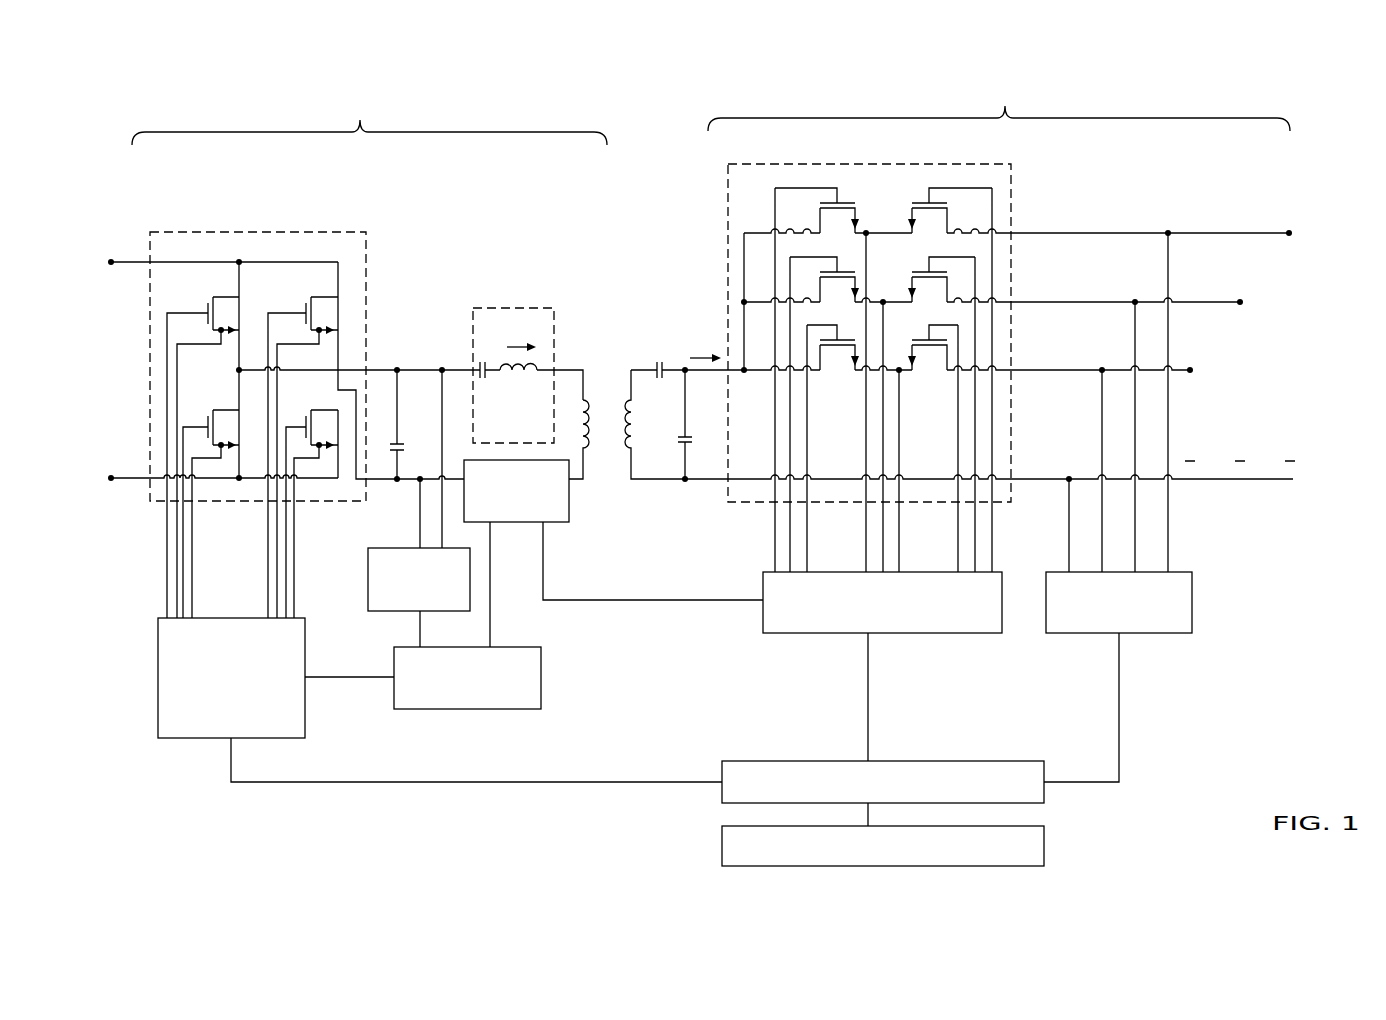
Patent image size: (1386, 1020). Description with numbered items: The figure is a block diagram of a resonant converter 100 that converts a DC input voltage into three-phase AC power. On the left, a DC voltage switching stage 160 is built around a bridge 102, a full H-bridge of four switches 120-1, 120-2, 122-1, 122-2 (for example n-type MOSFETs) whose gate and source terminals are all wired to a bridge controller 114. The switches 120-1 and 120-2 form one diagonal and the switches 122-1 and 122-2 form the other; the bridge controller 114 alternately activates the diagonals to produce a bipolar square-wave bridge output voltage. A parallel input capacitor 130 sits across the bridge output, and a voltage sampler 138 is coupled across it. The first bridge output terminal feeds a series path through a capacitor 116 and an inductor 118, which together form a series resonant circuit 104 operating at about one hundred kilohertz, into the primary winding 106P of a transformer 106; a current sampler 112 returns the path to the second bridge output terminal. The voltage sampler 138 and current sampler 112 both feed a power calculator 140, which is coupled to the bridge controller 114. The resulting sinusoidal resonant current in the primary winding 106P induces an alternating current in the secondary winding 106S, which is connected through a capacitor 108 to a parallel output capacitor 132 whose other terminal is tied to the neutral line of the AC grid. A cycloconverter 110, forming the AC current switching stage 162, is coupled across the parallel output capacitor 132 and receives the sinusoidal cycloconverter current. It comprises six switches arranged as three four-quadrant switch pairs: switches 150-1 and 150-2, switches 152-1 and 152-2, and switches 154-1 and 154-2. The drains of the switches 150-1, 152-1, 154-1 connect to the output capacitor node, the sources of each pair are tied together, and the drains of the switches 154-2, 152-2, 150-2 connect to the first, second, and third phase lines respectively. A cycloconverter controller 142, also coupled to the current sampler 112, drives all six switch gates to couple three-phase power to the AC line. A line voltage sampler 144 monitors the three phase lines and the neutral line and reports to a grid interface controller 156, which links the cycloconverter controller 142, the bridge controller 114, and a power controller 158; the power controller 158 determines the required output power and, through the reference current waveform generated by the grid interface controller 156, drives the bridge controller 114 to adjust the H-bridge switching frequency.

The resonant converter 100 is at (668, 82).
The DC voltage switching stage 160 is at (709, 471).
The AC current switching stage 162 is at (991, 324).
The bridge 102 is at (176, 232).
The switch 120-1 is at (219, 295).
The switch 120-2 is at (325, 450).
The switch 122-1 is at (318, 295).
The switch 122-2 is at (208, 423).
The resonant circuit 104 is at (525, 307).
The capacitor 116 is at (485, 373).
The inductor 118 is at (523, 373).
The transformer 106 is at (608, 376).
The primary winding 106P is at (590, 455).
The secondary winding 106S is at (638, 455).
The capacitor 108 is at (657, 358).
The parallel output capacitor 132 is at (690, 437).
The cycloconverter 110 is at (980, 164).
The switch 150-1 is at (817, 217).
The switch 150-2 is at (949, 218).
The switch 152-1 is at (817, 285).
The switch 152-2 is at (949, 286).
The switch 154-1 is at (836, 378).
The switch 154-2 is at (927, 378).
The parallel input capacitor 130 is at (395, 452).
The voltage sampler 138 is at (368, 577).
The current sampler 112 is at (517, 522).
The bridge controller 114 is at (243, 618).
The power calculator 140 is at (541, 662).
The cycloconverter controller 142 is at (836, 570).
The line voltage sampler 144 is at (1164, 635).
The grid interface controller 156 is at (762, 761).
The power controller 158 is at (1044, 840).